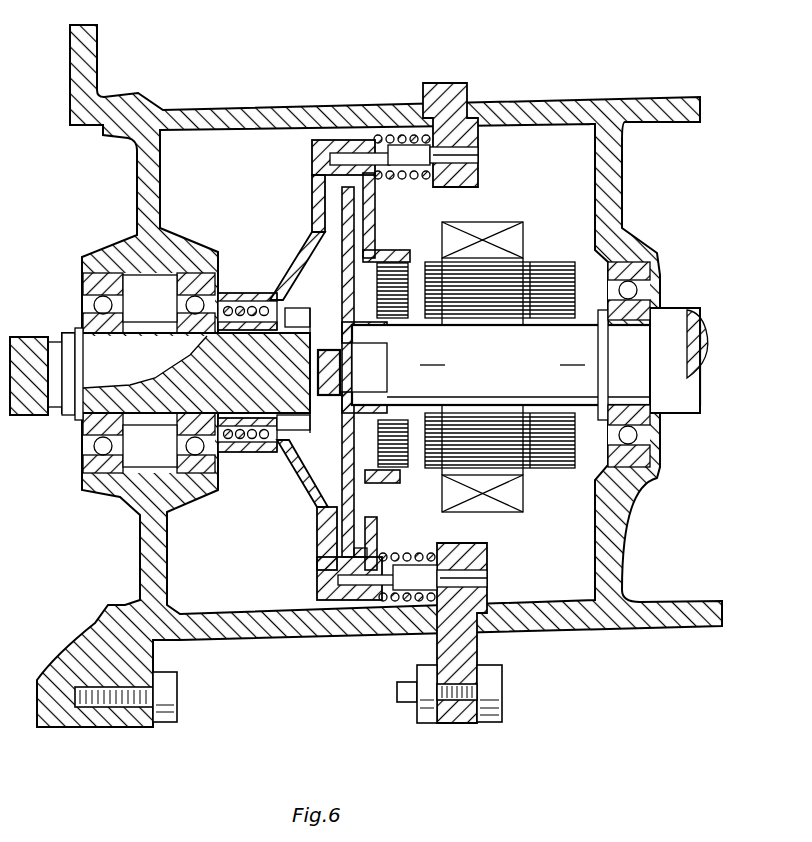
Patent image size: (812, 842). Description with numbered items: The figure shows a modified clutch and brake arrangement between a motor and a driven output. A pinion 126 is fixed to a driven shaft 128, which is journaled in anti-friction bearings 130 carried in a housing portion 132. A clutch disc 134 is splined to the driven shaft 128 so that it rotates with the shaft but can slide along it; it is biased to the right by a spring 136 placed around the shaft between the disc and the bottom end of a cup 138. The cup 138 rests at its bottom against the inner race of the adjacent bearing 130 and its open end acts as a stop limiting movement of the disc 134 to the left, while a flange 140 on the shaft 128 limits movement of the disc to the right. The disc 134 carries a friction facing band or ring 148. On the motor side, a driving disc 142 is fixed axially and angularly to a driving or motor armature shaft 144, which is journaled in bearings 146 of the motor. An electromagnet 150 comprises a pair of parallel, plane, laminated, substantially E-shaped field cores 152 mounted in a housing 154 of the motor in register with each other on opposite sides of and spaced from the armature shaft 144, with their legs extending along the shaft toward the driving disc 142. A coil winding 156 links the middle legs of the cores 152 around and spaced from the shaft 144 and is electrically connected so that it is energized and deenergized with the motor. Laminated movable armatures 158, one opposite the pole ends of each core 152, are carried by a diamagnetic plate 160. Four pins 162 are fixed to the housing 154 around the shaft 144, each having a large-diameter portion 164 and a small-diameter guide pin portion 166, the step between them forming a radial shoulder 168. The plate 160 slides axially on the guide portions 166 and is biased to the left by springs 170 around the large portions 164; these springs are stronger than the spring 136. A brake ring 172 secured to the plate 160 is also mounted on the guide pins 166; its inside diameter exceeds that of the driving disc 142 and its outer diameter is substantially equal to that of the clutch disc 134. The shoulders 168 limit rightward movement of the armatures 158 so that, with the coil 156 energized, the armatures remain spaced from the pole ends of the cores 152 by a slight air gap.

The pinion 126 is at (31, 336).
The driven shaft 128 is at (150, 370).
The anti-friction bearings 130 is at (177, 302).
The housing portion 132 is at (142, 178).
The clutch disc 134 is at (297, 258).
The spring 136 is at (258, 452).
The cup 138 is at (236, 292).
The flange 140 is at (308, 316).
The driving disc 142 is at (345, 437).
The driving or motor armature shaft 144 is at (519, 370).
The bearings 146 is at (644, 290).
The friction facing band or ring 148 is at (323, 148).
The electromagnet 150 is at (530, 216).
The laminated field cores 152 is at (550, 262).
The housing 154 is at (563, 625).
The coil winding 156 is at (483, 221).
The laminated movable armatures 158 is at (415, 262).
The diamagnetic plate 160 is at (376, 210).
The pins 162 is at (479, 158).
The large-diameter portion 164 is at (430, 148).
The guide pin portion 166 is at (358, 153).
The radial shoulder 168 is at (378, 136).
The springs 170 is at (402, 143).
The brake ring 172 is at (342, 600).